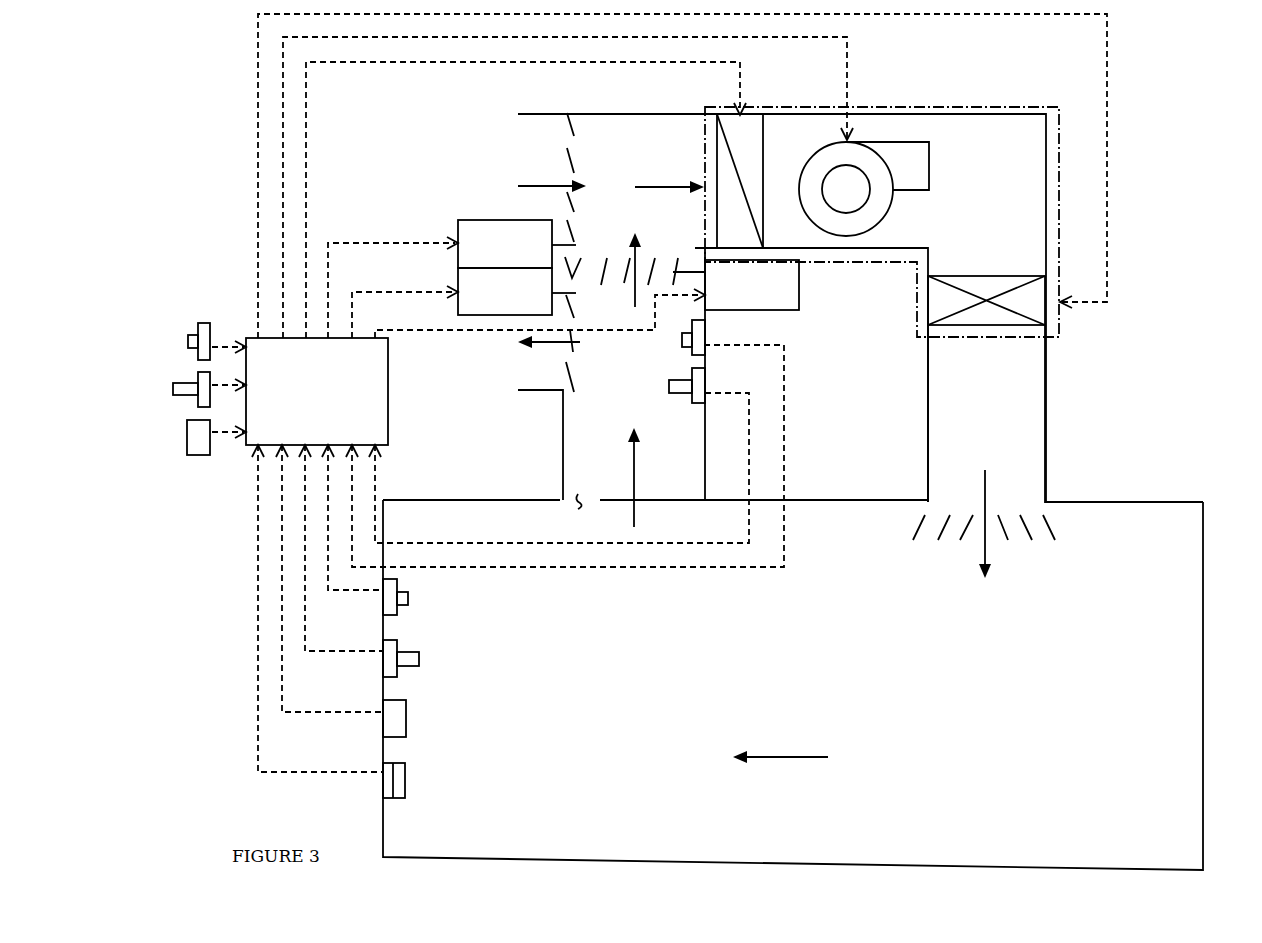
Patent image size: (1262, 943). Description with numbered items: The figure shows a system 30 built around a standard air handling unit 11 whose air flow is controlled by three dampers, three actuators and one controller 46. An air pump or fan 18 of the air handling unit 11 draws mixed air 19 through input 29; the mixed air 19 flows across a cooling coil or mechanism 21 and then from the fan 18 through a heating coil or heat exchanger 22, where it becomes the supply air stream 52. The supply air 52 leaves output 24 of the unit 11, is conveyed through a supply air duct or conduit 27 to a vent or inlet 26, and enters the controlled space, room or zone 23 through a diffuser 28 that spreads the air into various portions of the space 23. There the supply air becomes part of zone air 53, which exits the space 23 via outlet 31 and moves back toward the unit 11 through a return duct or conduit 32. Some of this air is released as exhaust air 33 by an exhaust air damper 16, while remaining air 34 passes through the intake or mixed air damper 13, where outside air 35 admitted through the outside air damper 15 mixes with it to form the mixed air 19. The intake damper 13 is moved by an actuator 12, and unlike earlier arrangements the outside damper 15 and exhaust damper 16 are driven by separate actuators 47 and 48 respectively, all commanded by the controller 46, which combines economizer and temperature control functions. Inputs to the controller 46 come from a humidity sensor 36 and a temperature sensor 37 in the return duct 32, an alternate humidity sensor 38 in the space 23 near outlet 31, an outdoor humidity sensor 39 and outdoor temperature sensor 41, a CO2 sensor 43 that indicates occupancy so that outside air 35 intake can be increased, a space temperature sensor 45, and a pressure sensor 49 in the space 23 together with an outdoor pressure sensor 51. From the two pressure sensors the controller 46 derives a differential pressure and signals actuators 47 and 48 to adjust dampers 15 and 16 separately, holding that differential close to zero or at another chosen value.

The air handling unit 11 is at (1043, 107).
The actuator 12 is at (800, 292).
The intake or mixed air damper 13 is at (600, 264).
The outdoor or outside air damper 15 is at (578, 160).
The exhaust air damper 16 is at (578, 350).
The air pump or fan 18 is at (893, 212).
The mixed air 19 is at (660, 184).
The cooling coil or mechanism 21 is at (765, 136).
The heating coil or heat exchanger 22 is at (980, 286).
The controlled space, room or zone 23 is at (810, 685).
The output 24 is at (985, 326).
The vent or inlet 26 is at (940, 500).
The supply air duct or conduit 27 is at (1047, 397).
The diffuser 28 is at (1057, 527).
The input 29 is at (705, 215).
The system 30 is at (1145, 89).
The outlet 31 is at (575, 503).
The duct or conduit 32 is at (575, 435).
The exhaust air 33 is at (532, 364).
The remaining air 34 is at (633, 298).
The outside air 35 is at (522, 180).
The humidity sensor 36 is at (688, 352).
The temperature sensor 37 is at (688, 400).
The alternate humidity sensor 38 is at (405, 590).
The outdoor humidity sensor 39 is at (207, 322).
The temperature sensor 41 is at (192, 373).
The CO2 sensor 43 is at (408, 770).
The temperature sensor 45 is at (400, 655).
The controller 46 is at (390, 377).
The actuator 47 is at (470, 218).
The actuator 48 is at (455, 310).
The pressure sensor 49 is at (408, 712).
The pressure sensor 51 is at (182, 460).
The air flow or stream 52 is at (987, 490).
The zone air 53 is at (640, 470).